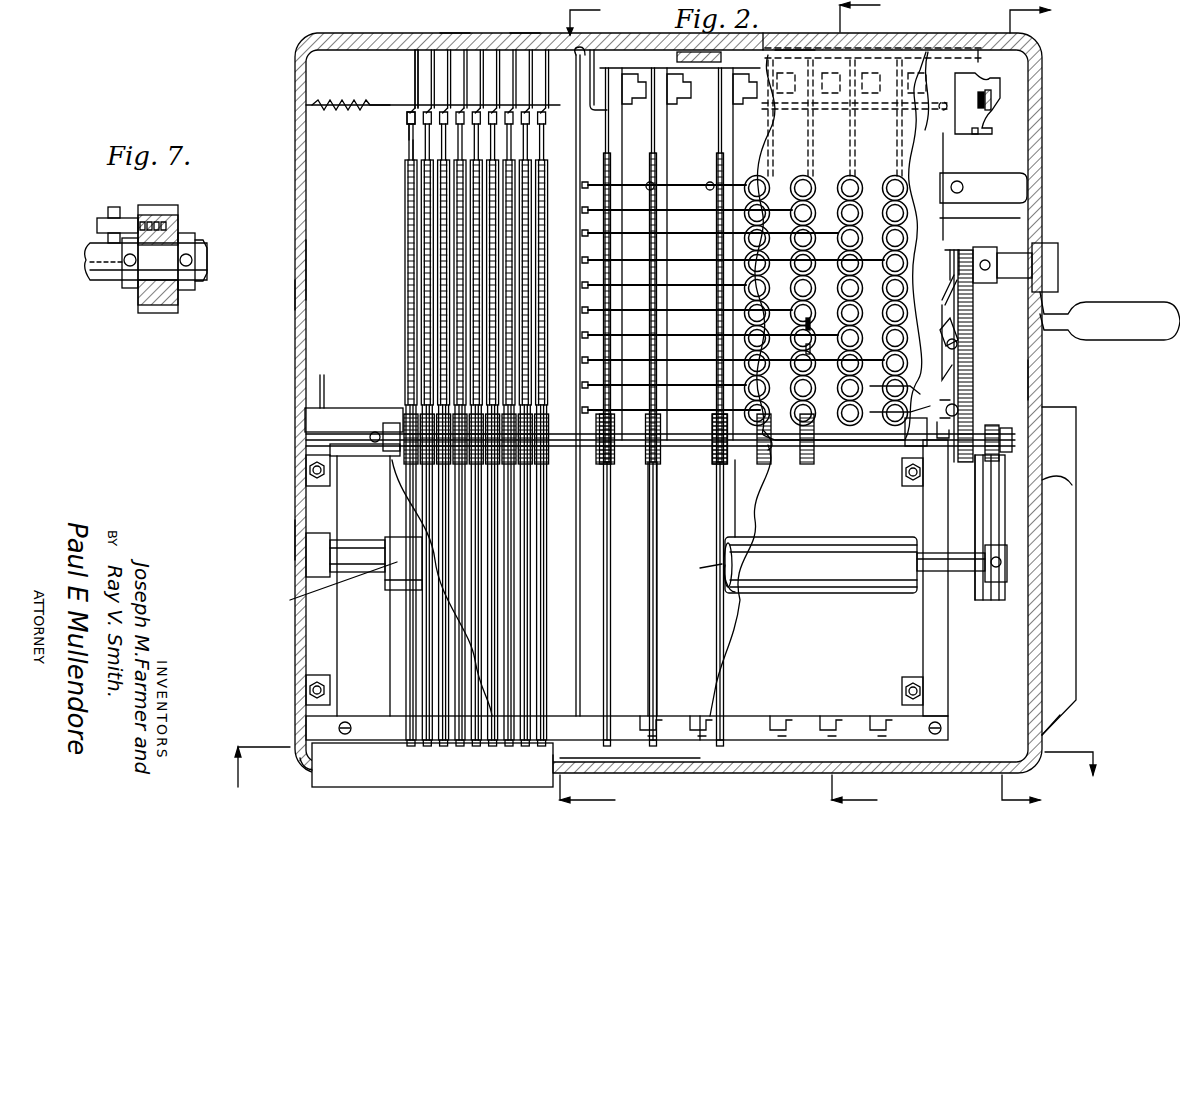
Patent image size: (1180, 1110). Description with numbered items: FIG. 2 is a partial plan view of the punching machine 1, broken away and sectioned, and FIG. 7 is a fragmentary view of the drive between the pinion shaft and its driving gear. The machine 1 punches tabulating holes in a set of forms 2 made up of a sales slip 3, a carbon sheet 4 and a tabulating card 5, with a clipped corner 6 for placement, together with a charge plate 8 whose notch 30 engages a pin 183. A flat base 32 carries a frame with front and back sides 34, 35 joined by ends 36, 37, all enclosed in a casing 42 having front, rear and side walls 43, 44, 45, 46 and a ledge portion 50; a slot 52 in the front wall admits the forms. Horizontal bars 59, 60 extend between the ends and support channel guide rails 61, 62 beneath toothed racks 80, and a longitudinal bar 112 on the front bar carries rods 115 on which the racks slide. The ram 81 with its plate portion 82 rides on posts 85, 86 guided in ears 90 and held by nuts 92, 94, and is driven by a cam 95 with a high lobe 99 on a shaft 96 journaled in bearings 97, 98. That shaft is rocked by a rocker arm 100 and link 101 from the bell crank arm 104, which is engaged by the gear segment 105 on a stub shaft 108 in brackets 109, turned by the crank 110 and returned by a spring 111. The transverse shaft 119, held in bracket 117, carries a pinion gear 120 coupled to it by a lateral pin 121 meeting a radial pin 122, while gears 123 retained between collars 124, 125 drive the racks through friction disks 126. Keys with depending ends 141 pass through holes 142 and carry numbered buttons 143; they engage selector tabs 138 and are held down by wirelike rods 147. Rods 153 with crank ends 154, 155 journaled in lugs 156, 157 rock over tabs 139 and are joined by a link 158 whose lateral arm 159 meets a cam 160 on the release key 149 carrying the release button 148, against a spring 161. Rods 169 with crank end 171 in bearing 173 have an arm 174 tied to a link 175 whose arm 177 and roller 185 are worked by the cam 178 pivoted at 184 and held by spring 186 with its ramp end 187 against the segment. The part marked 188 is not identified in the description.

In FIG. 2, the punching machine 1 is at (665, 757).
In FIG. 2, the set of forms 2 is at (1076, 627).
In FIG. 2, the sales slip 3 is at (1056, 603).
In FIG. 2, the carbon sheet 4 is at (848, 405).
In FIG. 2, the tabulating card 5 is at (580, 405).
In FIG. 2, the clipped corner 6 is at (1058, 728).
In FIG. 2, the charge plate 8 is at (325, 780).
In FIG. 2, the notch 30 is at (340, 440).
In FIG. 2, the base 32 is at (295, 290).
In FIG. 2, the front side 34 is at (680, 762).
In FIG. 2, the back side 35 is at (518, 45).
In FIG. 2, the end 36 is at (295, 528).
In FIG. 2, the end 37 is at (1030, 380).
In FIG. 2, the casing 42 is at (1036, 58).
In FIG. 2, the front wall 43 is at (628, 762).
In FIG. 2, the rear wall 44 is at (452, 40).
In FIG. 2, the side wall 45 is at (322, 293).
In FIG. 2, the side wall 46 is at (1036, 162).
In FIG. 2, the ledge portion 50 is at (870, 58).
In FIG. 2, the slot 52 is at (298, 762).
In FIG. 2, the horizontal bar 59 is at (352, 740).
In FIG. 2, the horizontal bar 60 is at (358, 408).
In FIG. 2, the guide rail 61 is at (647, 576).
In FIG. 2, the guide rail 62 is at (660, 586).
In FIG. 2, the toothed rack 80 is at (413, 246).
In FIG. 2, the ram 81 is at (735, 516).
In FIG. 2, the plate portion 82 is at (735, 538).
In FIG. 2, the post 85 is at (310, 466).
In FIG. 2, the post 86 is at (904, 474).
In FIG. 2, the ear 90 is at (312, 484).
In FIG. 2, the nut 92 is at (310, 475).
In FIG. 2, the nut 94 is at (908, 486).
In FIG. 2, the cam 95 is at (486, 585).
In FIG. 2, the shaft 96 is at (345, 566).
In FIG. 2, the bearing 97 is at (310, 552).
In FIG. 2, the bearing 98 is at (1008, 556).
In FIG. 2, the high lobe portion 99 is at (395, 590).
In FIG. 2, the rocker arm 100 is at (1000, 510).
In FIG. 2, the link 101 is at (992, 490).
In FIG. 2, the arm 104 is at (985, 470).
In FIG. 2, the gear segment 105 is at (960, 352).
In FIG. 2, the stub shaft 108 is at (1000, 255).
In FIG. 2, the bracket 109 is at (1020, 255).
In FIG. 2, the crank 110 is at (1052, 276).
In FIG. 2, the spring 111 is at (952, 255).
In FIG. 2, the longitudinal bar 112 is at (395, 742).
In FIG. 2, the rod 115 is at (415, 63).
In FIG. 2, the bracket 117 is at (388, 452).
In FIG. 2, the transverse shaft 119 is at (707, 448).
In FIG. 7, the transverse shaft 119 is at (100, 262).
In FIG. 2, the pinion gear 120 is at (985, 436).
In FIG. 7, the pinion gear 120 is at (172, 228).
In FIG. 2, the lateral pin 121 is at (960, 410).
In FIG. 7, the lateral pin 121 is at (97, 226).
In FIG. 2, the radial pin 122 is at (940, 448).
In FIG. 7, the radial pin 122 is at (110, 206).
In FIG. 2, the gear 123 is at (603, 462).
In FIG. 2, the collar 124 is at (770, 458).
In FIG. 2, the collar 125 is at (710, 436).
In FIG. 2, the friction disk 126 is at (740, 470).
In FIG. 2, the tab 138 is at (646, 184).
In FIG. 2, the tab 139 is at (690, 184).
In FIG. 2, the depending end 141 is at (670, 190).
In FIG. 2, the hole 142 is at (812, 345).
In FIG. 2, the button 143 is at (798, 180).
In FIG. 2, the wirelike rod 147 is at (578, 48).
In FIG. 2, the release button 148 is at (1000, 123).
In FIG. 2, the key 149 is at (992, 100).
In FIG. 2, the rod 153 is at (620, 123).
In FIG. 2, the crank end 154 is at (672, 716).
In FIG. 2, the crank end 155 is at (762, 45).
In FIG. 2, the lug 156 is at (675, 732).
In FIG. 2, the lug 157 is at (688, 104).
In FIG. 2, the link 158 is at (785, 48).
In FIG. 2, the lateral arm 159 is at (985, 136).
In FIG. 2, the cam 160 is at (984, 94).
In FIG. 2, the spring 161 is at (688, 62).
In FIG. 2, the rod 169 is at (440, 145).
In FIG. 2, the crank end 171 is at (409, 130).
In FIG. 2, the bearing 173 is at (407, 118).
In FIG. 2, the arm 174 is at (412, 105).
In FIG. 2, the link 175 is at (566, 104).
In FIG. 2, the arm 177 is at (948, 170).
In FIG. 2, the cam 178 is at (955, 372).
In FIG. 2, the pin 183 is at (370, 434).
In FIG. 2, the pivot 184 is at (973, 320).
In FIG. 2, the roller 185 is at (891, 401).
In FIG. 2, the spring 186 is at (973, 300).
In FIG. 2, the ramp end 187 is at (887, 379).
In FIG. 2, the spring 188 is at (345, 112).